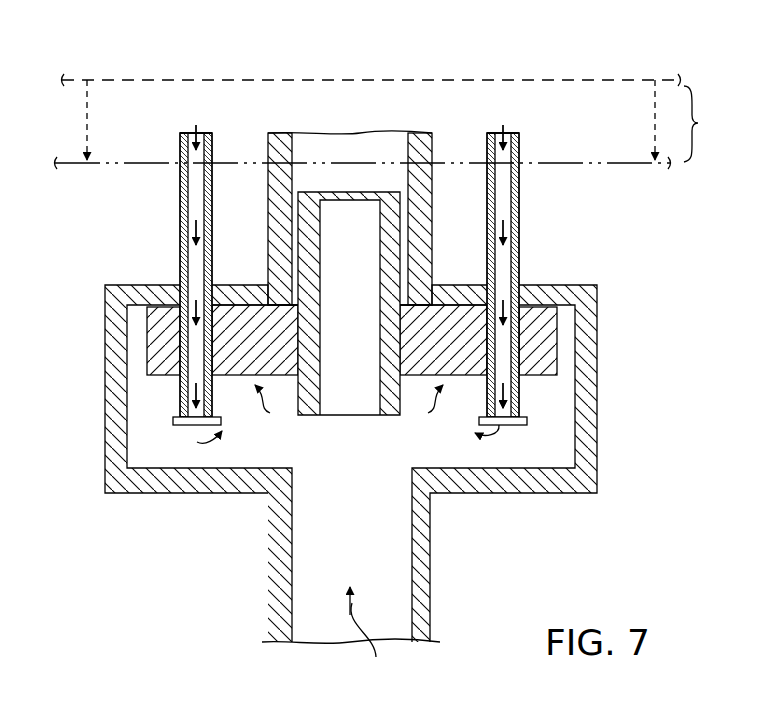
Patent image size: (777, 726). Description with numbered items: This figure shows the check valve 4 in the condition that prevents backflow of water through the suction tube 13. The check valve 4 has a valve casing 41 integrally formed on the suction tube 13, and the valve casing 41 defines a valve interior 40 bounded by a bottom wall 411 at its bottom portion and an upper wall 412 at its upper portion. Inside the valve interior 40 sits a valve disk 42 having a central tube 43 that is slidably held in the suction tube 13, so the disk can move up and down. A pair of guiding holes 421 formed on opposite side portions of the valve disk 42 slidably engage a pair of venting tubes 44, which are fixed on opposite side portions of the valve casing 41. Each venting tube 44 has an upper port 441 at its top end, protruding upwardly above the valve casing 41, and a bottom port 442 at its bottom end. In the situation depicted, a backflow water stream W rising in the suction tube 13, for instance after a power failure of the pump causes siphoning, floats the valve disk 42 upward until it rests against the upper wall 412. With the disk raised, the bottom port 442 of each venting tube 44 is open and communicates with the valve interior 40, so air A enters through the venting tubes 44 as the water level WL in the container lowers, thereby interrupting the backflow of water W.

The check valve 4 is at (406, 421).
The valve interior 40 is at (555, 410).
The valve casing 41 is at (588, 437).
The bottom wall 411 is at (531, 472).
The upper wall 412 is at (587, 283).
The valve disk 42 is at (371, 384).
The guiding hole 421 is at (173, 365).
The central tube 43 is at (372, 258).
The venting tube 44 is at (404, 290).
The upper port 441 is at (187, 131).
The bottom port 442 is at (185, 424).
The suction tube 13 is at (433, 133).
The air A is at (515, 231).
The water W is at (348, 531).
The water level WL is at (397, 121).